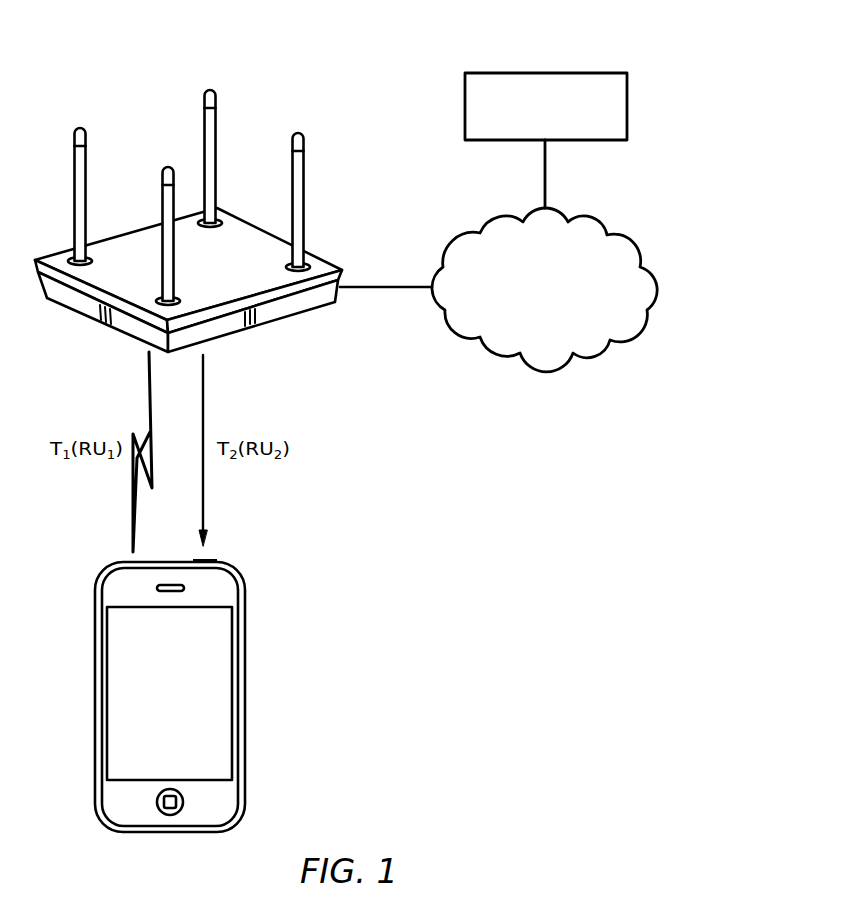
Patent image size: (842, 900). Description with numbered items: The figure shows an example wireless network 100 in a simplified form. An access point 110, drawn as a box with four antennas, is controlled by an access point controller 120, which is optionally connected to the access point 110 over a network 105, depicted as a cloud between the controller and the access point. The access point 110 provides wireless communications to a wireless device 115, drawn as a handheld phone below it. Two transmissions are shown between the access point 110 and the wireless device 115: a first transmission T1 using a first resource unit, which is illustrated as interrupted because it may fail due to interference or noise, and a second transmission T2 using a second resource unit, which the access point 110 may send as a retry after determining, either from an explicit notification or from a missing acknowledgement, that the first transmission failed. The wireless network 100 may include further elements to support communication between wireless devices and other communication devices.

The wireless network 100 is at (147, 27).
The network 105 is at (562, 310).
The access point 110 is at (283, 320).
The wireless device 115 is at (245, 635).
The access point controller 120 is at (465, 93).